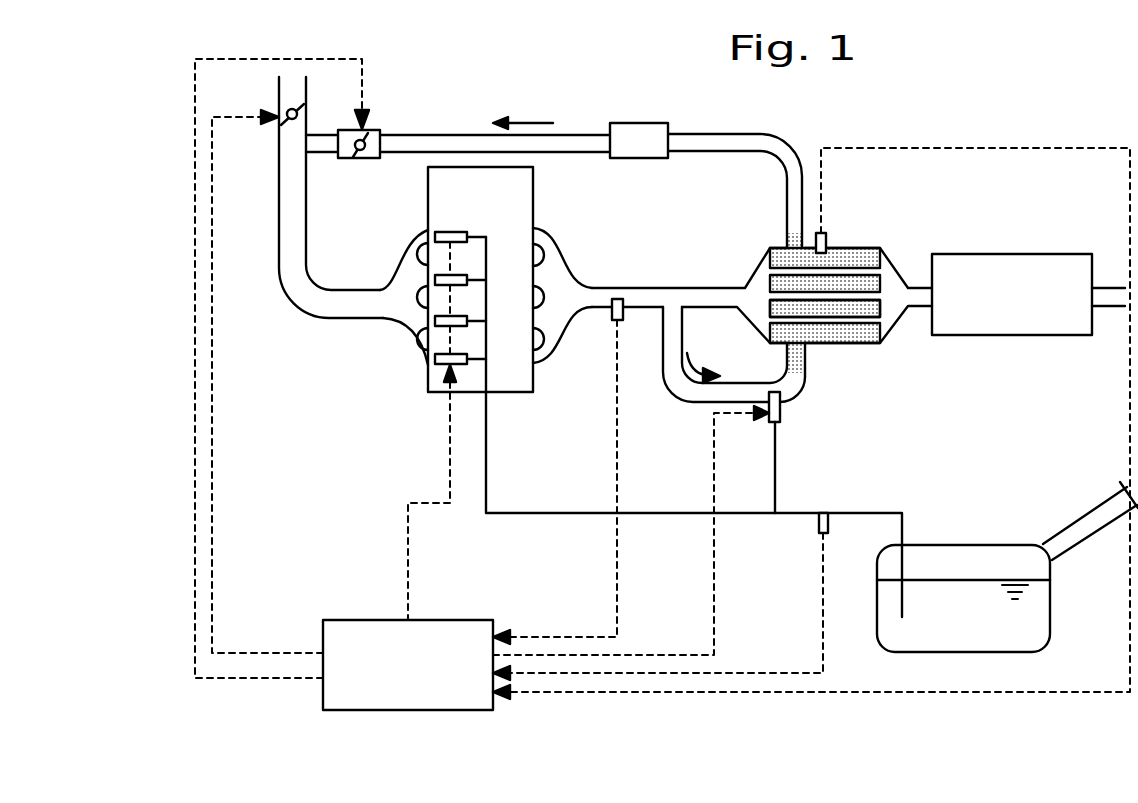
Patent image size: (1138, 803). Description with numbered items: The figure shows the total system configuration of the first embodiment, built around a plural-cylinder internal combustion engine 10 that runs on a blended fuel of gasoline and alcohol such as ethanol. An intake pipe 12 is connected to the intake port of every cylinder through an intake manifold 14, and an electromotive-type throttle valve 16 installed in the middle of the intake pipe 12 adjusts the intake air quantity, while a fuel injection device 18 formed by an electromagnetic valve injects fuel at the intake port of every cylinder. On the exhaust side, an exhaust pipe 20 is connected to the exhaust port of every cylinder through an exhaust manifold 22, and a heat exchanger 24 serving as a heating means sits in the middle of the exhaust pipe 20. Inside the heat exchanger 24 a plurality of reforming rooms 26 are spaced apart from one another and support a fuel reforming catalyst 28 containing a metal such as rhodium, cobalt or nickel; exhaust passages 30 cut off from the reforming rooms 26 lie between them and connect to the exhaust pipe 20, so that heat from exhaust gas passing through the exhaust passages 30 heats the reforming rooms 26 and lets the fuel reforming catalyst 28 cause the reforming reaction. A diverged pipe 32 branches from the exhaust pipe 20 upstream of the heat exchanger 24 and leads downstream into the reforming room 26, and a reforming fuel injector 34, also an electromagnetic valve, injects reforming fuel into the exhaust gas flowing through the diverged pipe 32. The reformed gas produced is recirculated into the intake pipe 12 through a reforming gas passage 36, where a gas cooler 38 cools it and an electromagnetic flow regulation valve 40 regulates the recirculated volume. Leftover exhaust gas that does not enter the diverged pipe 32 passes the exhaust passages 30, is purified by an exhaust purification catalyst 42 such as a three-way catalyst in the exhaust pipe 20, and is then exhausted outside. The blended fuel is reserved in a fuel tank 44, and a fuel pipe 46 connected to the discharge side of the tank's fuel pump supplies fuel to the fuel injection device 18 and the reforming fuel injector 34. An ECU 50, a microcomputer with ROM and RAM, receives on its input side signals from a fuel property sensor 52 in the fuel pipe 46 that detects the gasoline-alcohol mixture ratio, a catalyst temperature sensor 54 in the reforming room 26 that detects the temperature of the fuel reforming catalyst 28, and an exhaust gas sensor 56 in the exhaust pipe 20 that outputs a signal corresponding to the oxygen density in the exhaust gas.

The internal combustion engine 10 is at (533, 193).
The intake pipe 12 is at (280, 263).
The intake manifold 14 is at (388, 325).
The electromotive-type throttle valve 16 is at (280, 133).
The fuel injection device 18 is at (436, 372).
The exhaust pipe 20 is at (637, 288).
The exhaust manifold 22 is at (540, 365).
The heat exchanger 24 is at (868, 248).
The reforming rooms 26 is at (825, 308).
The fuel reforming catalyst 28 is at (880, 332).
The exhaust passages 30 is at (770, 293).
The diverged pipe 32 is at (690, 400).
The reforming fuel injector 34 is at (780, 405).
The reforming gas passage 36 is at (447, 133).
The gas cooler 38 is at (632, 127).
The electromagnetic flow regulation valve 40 is at (360, 158).
The exhaust purification catalyst 42 is at (1009, 254).
The fuel tank 44 is at (958, 544).
The fuel pipe 46 is at (547, 516).
The ECU 50 is at (341, 620).
The fuel property sensor 52 is at (819, 530).
The catalyst temperature sensor 54 is at (827, 240).
The exhaust gas sensor 56 is at (623, 312).